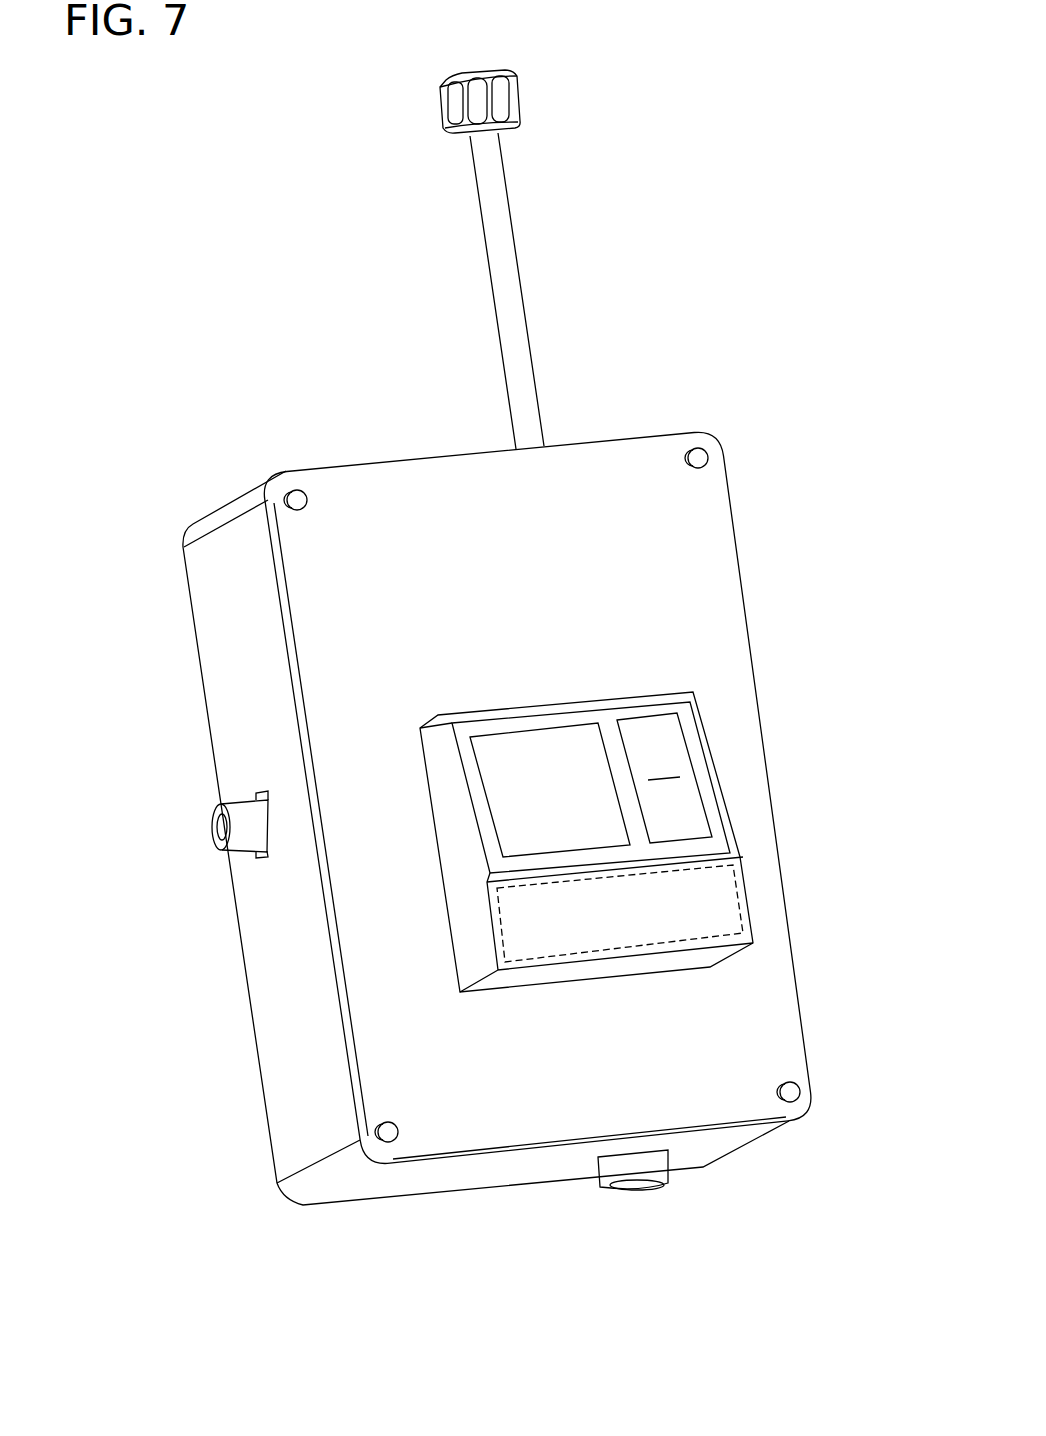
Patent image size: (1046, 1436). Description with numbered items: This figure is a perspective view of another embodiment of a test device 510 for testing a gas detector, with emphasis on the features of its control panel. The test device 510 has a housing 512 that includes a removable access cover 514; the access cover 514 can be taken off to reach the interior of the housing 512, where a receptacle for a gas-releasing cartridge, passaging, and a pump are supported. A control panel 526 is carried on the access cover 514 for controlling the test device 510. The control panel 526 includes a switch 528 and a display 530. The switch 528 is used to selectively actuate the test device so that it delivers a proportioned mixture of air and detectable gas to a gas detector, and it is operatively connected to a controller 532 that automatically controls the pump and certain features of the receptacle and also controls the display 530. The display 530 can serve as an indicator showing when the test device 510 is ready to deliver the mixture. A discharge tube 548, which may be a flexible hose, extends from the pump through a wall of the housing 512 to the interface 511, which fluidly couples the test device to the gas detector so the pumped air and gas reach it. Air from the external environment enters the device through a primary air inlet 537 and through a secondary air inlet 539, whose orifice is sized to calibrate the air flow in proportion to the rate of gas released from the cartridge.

The test device 510 is at (505, 724).
The interface 511 is at (516, 98).
The housing 512 is at (285, 1205).
The access cover 514 is at (707, 561).
The control panel 526 is at (644, 809).
The switch 528 is at (648, 743).
The display 530 is at (568, 795).
The controller 532 is at (740, 910).
The primary air inlet 537 is at (633, 1168).
The secondary air inlet 539 is at (245, 840).
The discharge tube 548 is at (503, 263).